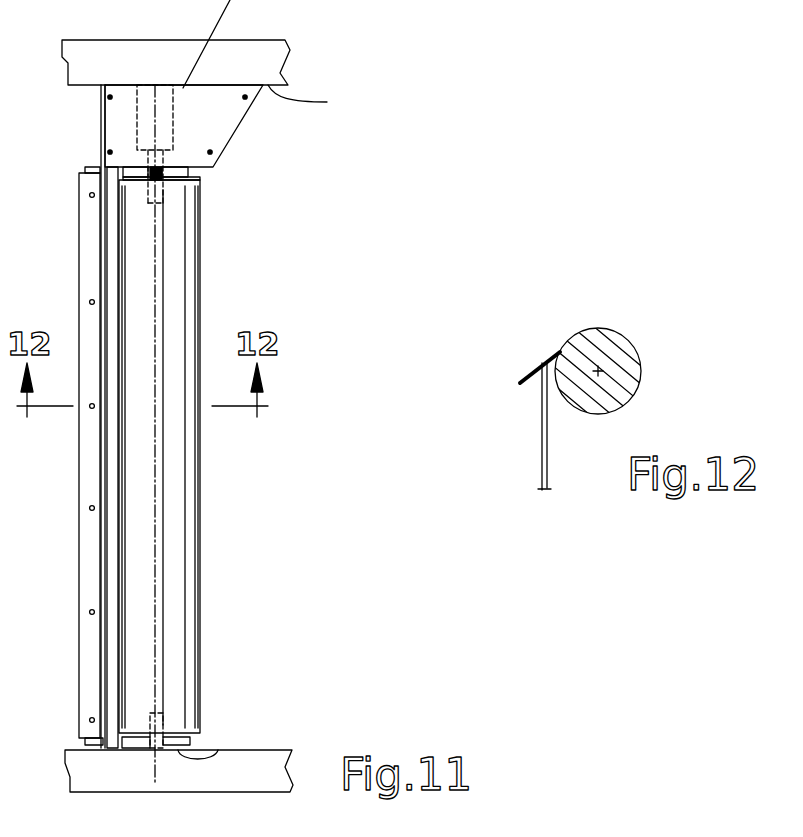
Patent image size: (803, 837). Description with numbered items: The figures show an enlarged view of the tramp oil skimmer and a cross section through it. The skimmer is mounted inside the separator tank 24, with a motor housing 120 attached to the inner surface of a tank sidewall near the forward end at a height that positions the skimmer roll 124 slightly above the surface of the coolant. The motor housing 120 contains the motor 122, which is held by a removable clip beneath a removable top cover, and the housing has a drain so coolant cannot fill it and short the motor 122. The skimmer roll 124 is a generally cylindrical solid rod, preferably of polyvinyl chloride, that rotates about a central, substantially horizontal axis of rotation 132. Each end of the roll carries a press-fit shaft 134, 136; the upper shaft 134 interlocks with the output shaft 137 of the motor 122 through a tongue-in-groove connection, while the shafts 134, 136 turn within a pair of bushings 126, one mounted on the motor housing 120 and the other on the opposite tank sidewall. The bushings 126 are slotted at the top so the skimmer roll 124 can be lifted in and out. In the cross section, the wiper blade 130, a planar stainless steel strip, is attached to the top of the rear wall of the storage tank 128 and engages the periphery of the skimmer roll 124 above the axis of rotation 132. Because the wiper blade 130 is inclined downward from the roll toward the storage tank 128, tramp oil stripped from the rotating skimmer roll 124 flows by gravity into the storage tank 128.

In FIG. 11, the separator tank 24 is at (313, 99).
In FIG. 11, the motor housing 120 is at (100, 122).
In FIG. 11, the motor 122 is at (173, 120).
In FIG. 11, the skimmer roll 124 is at (200, 588).
In FIG. 12, the skimmer roll 124 is at (608, 333).
In FIG. 11, the bushings 126 is at (180, 167).
In FIG. 11, the storage tank 128 is at (100, 138).
In FIG. 12, the storage tank 128 is at (547, 475).
In FIG. 11, the wiper blade 130 is at (97, 167).
In FIG. 12, the wiper blade 130 is at (530, 377).
In FIG. 11, the axis of rotation 132 is at (153, 672).
In FIG. 11, the shaft 134 is at (188, 177).
In FIG. 11, the shaft 136 is at (193, 738).
In FIG. 11, the output shaft 137 is at (160, 158).